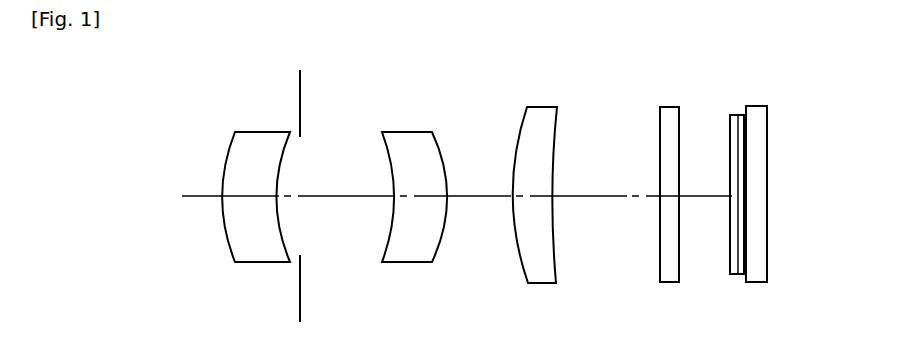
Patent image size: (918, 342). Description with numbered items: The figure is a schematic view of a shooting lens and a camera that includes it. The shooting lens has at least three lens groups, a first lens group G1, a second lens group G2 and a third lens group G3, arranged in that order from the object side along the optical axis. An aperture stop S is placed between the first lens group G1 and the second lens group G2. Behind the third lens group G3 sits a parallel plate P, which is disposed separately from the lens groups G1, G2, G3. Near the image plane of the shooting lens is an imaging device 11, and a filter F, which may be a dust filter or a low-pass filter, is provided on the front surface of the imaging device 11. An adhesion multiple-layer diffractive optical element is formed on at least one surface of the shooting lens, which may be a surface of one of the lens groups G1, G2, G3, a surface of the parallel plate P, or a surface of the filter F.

The first lens group G1 is at (246, 131).
The aperture stop S is at (298, 80).
The second lens group G2 is at (406, 131).
The third lens group G3 is at (540, 107).
The parallel plate P is at (670, 107).
The filter F is at (735, 115).
The imaging device 11 is at (753, 98).